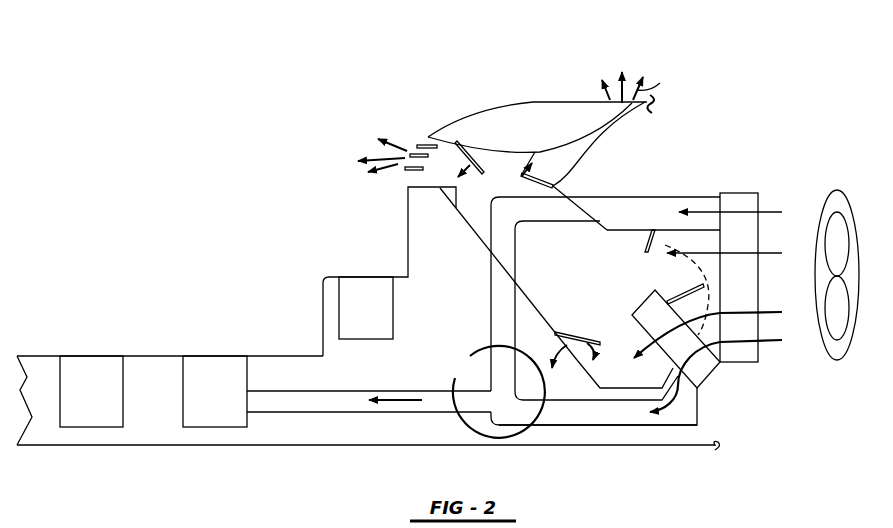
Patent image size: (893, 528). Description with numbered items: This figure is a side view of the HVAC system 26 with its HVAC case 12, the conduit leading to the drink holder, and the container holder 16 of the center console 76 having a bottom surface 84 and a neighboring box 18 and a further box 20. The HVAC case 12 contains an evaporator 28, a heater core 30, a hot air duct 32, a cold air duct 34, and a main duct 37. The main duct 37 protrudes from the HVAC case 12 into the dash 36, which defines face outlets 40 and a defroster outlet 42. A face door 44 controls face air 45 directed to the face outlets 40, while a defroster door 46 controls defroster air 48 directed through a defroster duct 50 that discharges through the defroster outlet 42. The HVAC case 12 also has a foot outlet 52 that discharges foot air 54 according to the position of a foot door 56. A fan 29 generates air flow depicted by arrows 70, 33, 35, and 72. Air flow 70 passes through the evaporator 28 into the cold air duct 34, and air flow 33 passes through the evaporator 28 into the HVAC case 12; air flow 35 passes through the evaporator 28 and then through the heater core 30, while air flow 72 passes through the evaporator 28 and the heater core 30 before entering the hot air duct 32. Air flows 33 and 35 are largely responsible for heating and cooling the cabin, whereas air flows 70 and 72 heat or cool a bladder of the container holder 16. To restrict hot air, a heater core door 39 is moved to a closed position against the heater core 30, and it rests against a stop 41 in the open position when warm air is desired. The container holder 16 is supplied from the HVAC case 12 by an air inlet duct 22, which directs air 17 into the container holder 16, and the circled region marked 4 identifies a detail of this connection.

The HVAC case 12 is at (782, 108).
The HVAC system 26 is at (208, 181).
The center console 76 is at (167, 356).
The bottom surface 84 is at (163, 445).
The first component box 18 is at (123, 390).
The container holder 16 is at (247, 377).
The component box 20 is at (393, 288).
The air inlet duct 22 is at (287, 412).
The air 17 is at (407, 399).
The detail circle FIG. 4 is at (499, 345).
The cold air duct 34 is at (490, 275).
The hot air duct 32 is at (587, 427).
The foot outlet 52 is at (616, 374).
The foot air 54 is at (552, 336).
The foot door 56 is at (583, 336).
The main duct 37 is at (468, 223).
The dash 36 is at (530, 102).
The face door 44 is at (530, 138).
The defroster door 46 is at (555, 183).
The defroster outlet 42 is at (612, 108).
The defroster air 48 is at (660, 83).
The defroster duct 50 is at (630, 127).
The face air 45 is at (395, 147).
The face outlets 40 is at (438, 188).
The stop 41 is at (645, 250).
The heater core door 39 is at (687, 292).
The evaporator 28 is at (743, 192).
The air flow 70 is at (775, 212).
The air flow 33 is at (772, 252).
The air flow 35 is at (775, 313).
The air flow 72 is at (772, 342).
The heater core 30 is at (710, 372).
The fan 29 is at (845, 357).